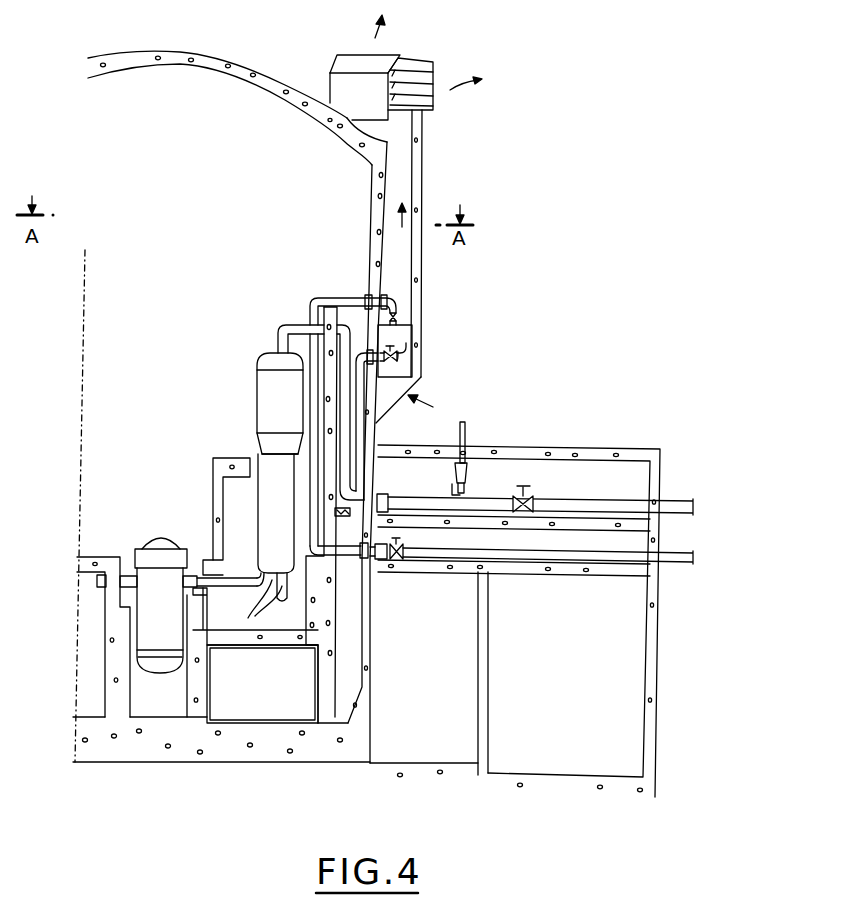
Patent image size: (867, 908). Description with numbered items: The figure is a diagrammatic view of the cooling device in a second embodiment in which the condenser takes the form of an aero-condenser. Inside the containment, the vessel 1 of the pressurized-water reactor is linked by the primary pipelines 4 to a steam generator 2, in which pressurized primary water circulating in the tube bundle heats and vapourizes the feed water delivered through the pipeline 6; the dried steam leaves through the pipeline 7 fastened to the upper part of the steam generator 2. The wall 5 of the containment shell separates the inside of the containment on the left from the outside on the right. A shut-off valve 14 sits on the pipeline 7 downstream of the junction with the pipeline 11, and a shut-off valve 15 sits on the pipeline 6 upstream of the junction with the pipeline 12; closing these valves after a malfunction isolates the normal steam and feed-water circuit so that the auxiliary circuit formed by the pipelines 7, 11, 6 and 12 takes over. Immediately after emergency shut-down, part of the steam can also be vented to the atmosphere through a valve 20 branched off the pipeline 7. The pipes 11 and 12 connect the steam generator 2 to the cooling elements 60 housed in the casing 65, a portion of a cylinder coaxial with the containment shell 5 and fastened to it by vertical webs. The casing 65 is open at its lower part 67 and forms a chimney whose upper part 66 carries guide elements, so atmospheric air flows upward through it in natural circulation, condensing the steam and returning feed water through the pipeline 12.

The vessel 1 is at (155, 593).
The steam generator 2 is at (268, 403).
The primary pipelines 4 is at (267, 604).
The containment shell wall 5 is at (378, 193).
The feed-water pipeline 6 is at (312, 489).
The steam pipeline 7 is at (298, 325).
The pipeline 11 is at (350, 298).
The pipeline 12 is at (358, 427).
The shut-off valve 14 is at (530, 493).
The shut-off valve 15 is at (398, 561).
The valve 20 is at (467, 472).
The cooling elements 60 is at (399, 333).
The casing 65 is at (423, 143).
The upper part 66 is at (437, 78).
The lower part 67 is at (417, 383).